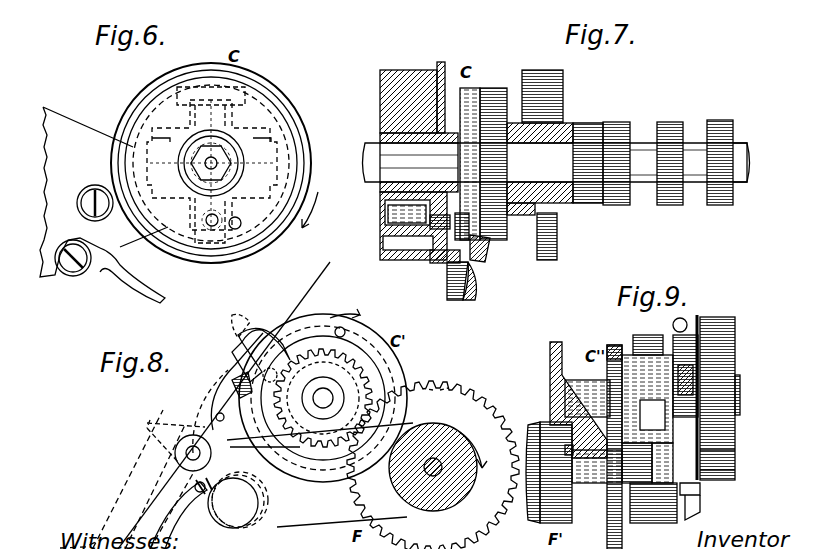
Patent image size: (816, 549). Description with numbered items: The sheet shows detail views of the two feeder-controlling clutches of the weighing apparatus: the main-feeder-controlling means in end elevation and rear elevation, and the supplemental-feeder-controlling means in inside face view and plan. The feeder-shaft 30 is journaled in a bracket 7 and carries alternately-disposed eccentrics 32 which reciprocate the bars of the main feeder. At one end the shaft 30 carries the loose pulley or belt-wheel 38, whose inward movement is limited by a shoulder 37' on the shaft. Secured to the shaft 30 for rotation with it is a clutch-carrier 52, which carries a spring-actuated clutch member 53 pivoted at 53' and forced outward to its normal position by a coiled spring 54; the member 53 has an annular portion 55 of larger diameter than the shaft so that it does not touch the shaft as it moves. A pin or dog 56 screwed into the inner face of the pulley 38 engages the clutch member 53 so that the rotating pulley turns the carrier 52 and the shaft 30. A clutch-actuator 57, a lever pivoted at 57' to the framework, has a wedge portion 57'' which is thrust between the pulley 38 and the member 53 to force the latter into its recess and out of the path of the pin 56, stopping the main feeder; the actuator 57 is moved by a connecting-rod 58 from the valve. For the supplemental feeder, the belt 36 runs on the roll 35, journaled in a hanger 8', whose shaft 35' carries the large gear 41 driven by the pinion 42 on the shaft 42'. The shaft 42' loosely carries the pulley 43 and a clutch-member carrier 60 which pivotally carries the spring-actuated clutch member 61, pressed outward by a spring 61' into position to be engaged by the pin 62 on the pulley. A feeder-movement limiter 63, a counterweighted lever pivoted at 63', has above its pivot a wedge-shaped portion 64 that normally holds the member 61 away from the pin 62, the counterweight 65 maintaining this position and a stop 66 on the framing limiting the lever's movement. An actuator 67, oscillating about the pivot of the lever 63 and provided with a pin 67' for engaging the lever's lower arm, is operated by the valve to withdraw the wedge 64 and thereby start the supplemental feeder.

In FIG. 6, the bracket 7 is at (80, 133).
In FIG. 7, the bracket 7 is at (553, 233).
In FIG. 8, the bracket or hanger 8' is at (473, 433).
In FIG. 9, the bracket or hanger 8' is at (593, 443).
In FIG. 6, the feeder-shaft 30 is at (215, 160).
In FIG. 7, the feeder-shaft 30 is at (558, 140).
In FIG. 7, the eccentrics 32 is at (640, 143).
In FIG. 8, the supplemental-feeder supporting-roll 35 is at (433, 478).
In FIG. 9, the supplemental-feeder supporting-roll 35 is at (528, 477).
In FIG. 8, the shaft of the rear roll 35' is at (466, 471).
In FIG. 9, the shaft of the rear roll 35' is at (559, 458).
In FIG. 8, the belt 36 is at (360, 518).
In FIG. 9, the belt 36 is at (545, 522).
In FIG. 7, the shoulder 37' is at (407, 213).
In FIG. 6, the pulley or belt-wheel 38 is at (230, 75).
In FIG. 7, the pulley or belt-wheel 38 is at (420, 70).
In FIG. 8, the gear 41 is at (457, 394).
In FIG. 9, the gear 41 is at (607, 517).
In FIG. 8, the pinion 42 is at (344, 382).
In FIG. 9, the pinion 42 is at (611, 343).
In FIG. 8, the shaft 42' is at (364, 383).
In FIG. 9, the shaft 42' is at (751, 392).
In FIG. 8, the pulley or belt-wheel 43 is at (321, 483).
In FIG. 9, the pulley or belt-wheel 43 is at (730, 450).
In FIG. 6, the clutch-carrier 52 is at (190, 236).
In FIG. 7, the clutch-carrier 52 is at (500, 226).
In FIG. 6, the spring-actuated clutch member 53 is at (246, 245).
In FIG. 7, the spring-actuated clutch member 53 is at (483, 260).
In FIG. 6, the pivot 53' is at (215, 156).
In FIG. 7, the pivot 53' is at (488, 151).
In FIG. 6, the coiled spring 54 is at (216, 228).
In FIG. 7, the coiled spring 54 is at (483, 232).
In FIG. 6, the annular portion 55 is at (245, 152).
In FIG. 7, the annular portion 55 is at (420, 188).
In FIG. 6, the clutch member (pin or dog) 56 is at (252, 226).
In FIG. 7, the clutch member (pin or dog) 56 is at (440, 255).
In FIG. 6, the clutch-actuator 57 is at (130, 275).
In FIG. 7, the clutch-actuator 57 is at (446, 281).
In FIG. 6, the pivot 57' is at (91, 192).
In FIG. 7, the pivot 57' is at (404, 225).
In FIG. 7, the wedge portion 57'' is at (482, 283).
In FIG. 6, the connecting-rod 58 is at (53, 270).
In FIG. 8, the clutch-member carrier 60 is at (279, 350).
In FIG. 9, the clutch-member carrier 60 is at (645, 335).
In FIG. 8, the spring-actuated clutch member 61 is at (222, 362).
In FIG. 9, the spring-actuated clutch member 61 is at (717, 373).
In FIG. 8, the spring 61' is at (293, 340).
In FIG. 8, the clutch member or pin 62 is at (347, 334).
In FIG. 9, the clutch member or pin 62 is at (708, 325).
In FIG. 8, the feeder-movement limiter 63 is at (209, 393).
In FIG. 9, the feeder-movement limiter 63 is at (701, 311).
In FIG. 8, the pivot 63' is at (168, 453).
In FIG. 8, the wedge-shaped portion 64 is at (236, 384).
In FIG. 9, the wedge-shaped portion 64 is at (700, 378).
In FIG. 8, the counterweight 65 is at (240, 505).
In FIG. 9, the counterweight 65 is at (658, 515).
In FIG. 8, the stop 66 is at (165, 441).
In FIG. 8, the actuator 67 is at (157, 515).
In FIG. 9, the actuator 67 is at (709, 507).
In FIG. 8, the pin 67' is at (198, 502).
In FIG. 9, the pin 67' is at (709, 489).